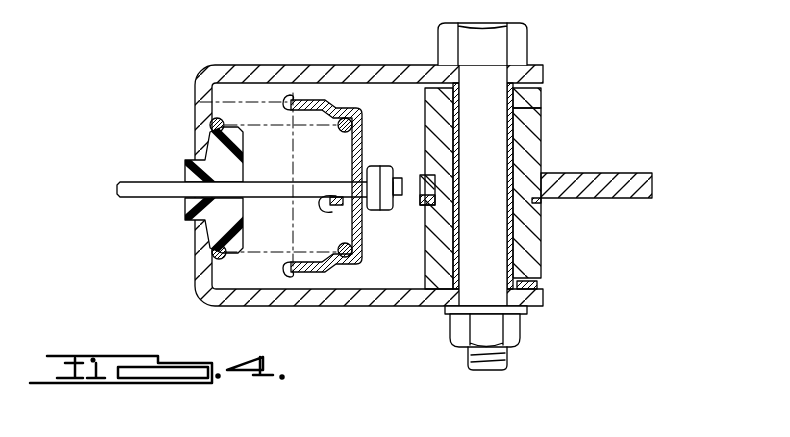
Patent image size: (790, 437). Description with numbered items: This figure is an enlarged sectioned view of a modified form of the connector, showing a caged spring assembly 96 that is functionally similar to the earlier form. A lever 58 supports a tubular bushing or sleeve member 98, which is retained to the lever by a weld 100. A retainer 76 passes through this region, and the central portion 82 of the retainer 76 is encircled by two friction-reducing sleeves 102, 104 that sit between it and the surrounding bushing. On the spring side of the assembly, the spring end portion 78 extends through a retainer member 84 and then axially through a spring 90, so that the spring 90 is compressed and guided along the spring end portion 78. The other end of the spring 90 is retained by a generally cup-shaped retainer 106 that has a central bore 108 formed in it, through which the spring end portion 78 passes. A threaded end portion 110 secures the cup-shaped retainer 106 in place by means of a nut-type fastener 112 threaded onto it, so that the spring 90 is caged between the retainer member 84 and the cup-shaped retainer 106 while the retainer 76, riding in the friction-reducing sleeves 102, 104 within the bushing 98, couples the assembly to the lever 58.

The lever 58 is at (629, 183).
The retainer 76 is at (500, 35).
The spring end portion 78 is at (117, 192).
The central portion 82 is at (500, 250).
The retainer member 84 is at (187, 170).
The spring 90 is at (214, 258).
The caged spring assembly 96 is at (340, 318).
The tubular bushing or sleeve member 98 is at (528, 132).
The weld 100 is at (534, 203).
The friction-reducing sleeve 102 is at (530, 281).
The friction-reducing sleeve 104 is at (518, 105).
The cup-shaped retainer 106 is at (323, 100).
The central bore 108 is at (328, 219).
The threaded end portion 110 is at (400, 196).
The nut-type fastener 112 is at (373, 165).